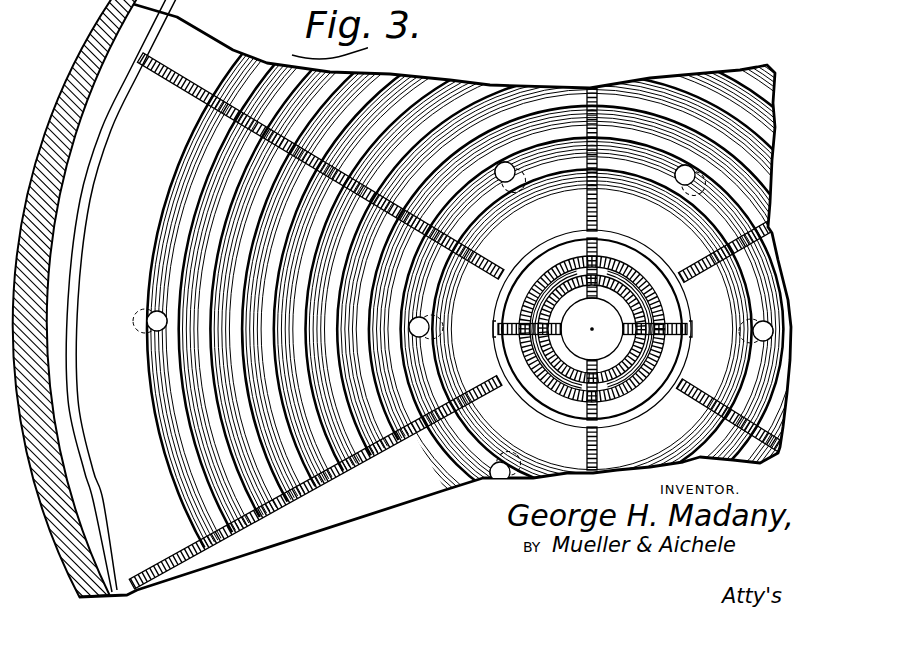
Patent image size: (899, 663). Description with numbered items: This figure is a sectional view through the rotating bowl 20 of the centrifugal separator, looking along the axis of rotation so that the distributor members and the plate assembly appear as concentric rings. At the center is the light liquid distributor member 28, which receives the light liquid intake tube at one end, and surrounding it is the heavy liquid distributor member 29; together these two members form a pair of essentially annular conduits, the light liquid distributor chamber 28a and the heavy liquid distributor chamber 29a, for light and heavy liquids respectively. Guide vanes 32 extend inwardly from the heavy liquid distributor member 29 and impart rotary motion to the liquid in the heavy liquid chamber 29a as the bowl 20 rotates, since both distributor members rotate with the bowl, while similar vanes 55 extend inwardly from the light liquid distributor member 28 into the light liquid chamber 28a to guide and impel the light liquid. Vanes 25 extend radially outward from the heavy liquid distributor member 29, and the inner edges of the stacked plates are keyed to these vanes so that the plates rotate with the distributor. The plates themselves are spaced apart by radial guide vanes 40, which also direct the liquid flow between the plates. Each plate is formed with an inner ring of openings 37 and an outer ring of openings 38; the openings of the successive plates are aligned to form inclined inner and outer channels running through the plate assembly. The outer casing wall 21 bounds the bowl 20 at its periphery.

The bowl 20 is at (68, 105).
The casing wall 21 is at (482, 331).
The vanes 25 is at (505, 307).
The light liquid distributor member 28 is at (684, 300).
The light liquid distributor chamber 28a is at (608, 290).
The heavy liquid distributor member 29 is at (652, 278).
The heavy liquid distributor chamber 29a is at (637, 270).
The guide vanes 32 is at (533, 306).
The inner ring of openings 37 is at (508, 182).
The outer ring of openings 38 is at (170, 312).
The radial guide vanes 40 is at (187, 80).
The vanes 55 is at (569, 268).